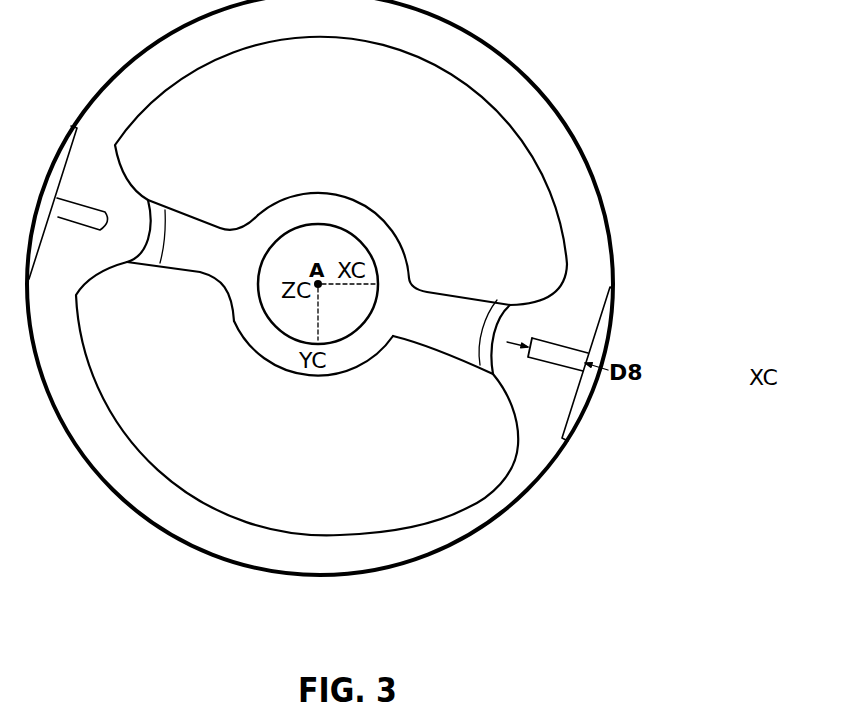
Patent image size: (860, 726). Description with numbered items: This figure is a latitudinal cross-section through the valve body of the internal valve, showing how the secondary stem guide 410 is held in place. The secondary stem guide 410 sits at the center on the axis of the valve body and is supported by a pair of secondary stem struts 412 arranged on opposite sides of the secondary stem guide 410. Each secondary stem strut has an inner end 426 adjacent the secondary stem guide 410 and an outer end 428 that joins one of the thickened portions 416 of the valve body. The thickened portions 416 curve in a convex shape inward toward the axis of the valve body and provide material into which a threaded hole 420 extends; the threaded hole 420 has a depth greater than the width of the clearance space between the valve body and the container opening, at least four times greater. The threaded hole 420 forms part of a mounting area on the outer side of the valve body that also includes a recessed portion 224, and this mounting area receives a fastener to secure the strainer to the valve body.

The recessed portion 224 is at (577, 410).
The secondary stem guide 410 is at (350, 352).
The secondary stem struts 412 is at (433, 317).
The thickened portions 416 is at (522, 334).
The threaded hole 420 is at (552, 358).
The inner end 426 is at (400, 310).
The outer end 428 is at (488, 320).